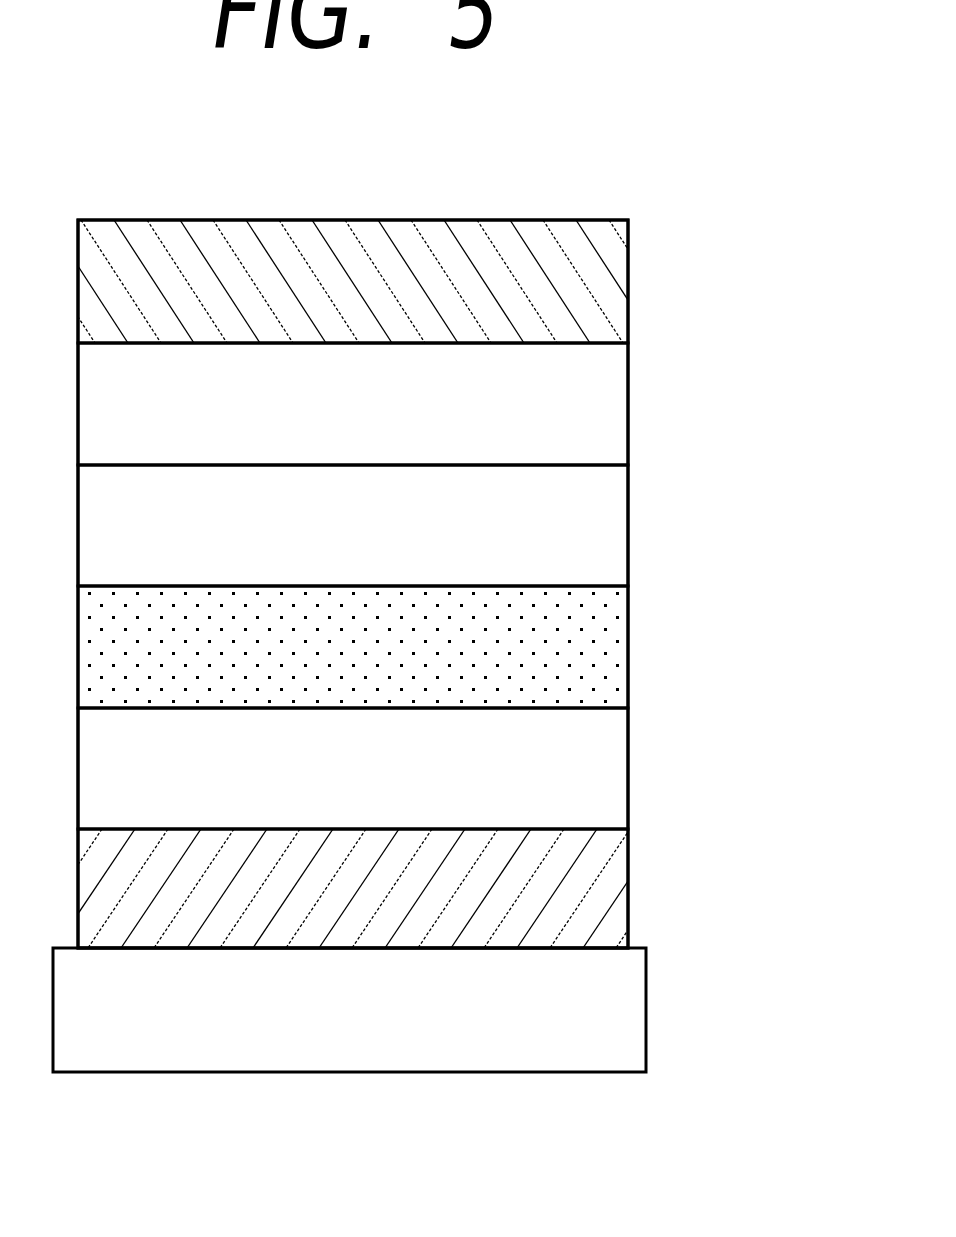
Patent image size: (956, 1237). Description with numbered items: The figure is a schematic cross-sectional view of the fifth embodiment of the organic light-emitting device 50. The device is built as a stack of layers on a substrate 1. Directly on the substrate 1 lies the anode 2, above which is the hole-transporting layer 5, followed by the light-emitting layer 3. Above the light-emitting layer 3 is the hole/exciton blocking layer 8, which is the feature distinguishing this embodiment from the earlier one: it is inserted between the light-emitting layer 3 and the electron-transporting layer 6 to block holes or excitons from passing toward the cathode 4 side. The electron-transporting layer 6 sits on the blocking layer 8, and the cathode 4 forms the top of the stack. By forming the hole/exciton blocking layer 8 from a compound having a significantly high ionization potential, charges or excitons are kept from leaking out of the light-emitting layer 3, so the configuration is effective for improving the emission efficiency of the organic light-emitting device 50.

The organic light-emitting device 50 is at (610, 193).
The substrate 1 is at (608, 1017).
The anode 2 is at (580, 884).
The hole-transporting layer 5 is at (583, 771).
The light-emitting layer 3 is at (585, 645).
The hole/exciton blocking layer 8 is at (588, 527).
The electron-transporting layer 6 is at (588, 403).
The cathode 4 is at (588, 282).